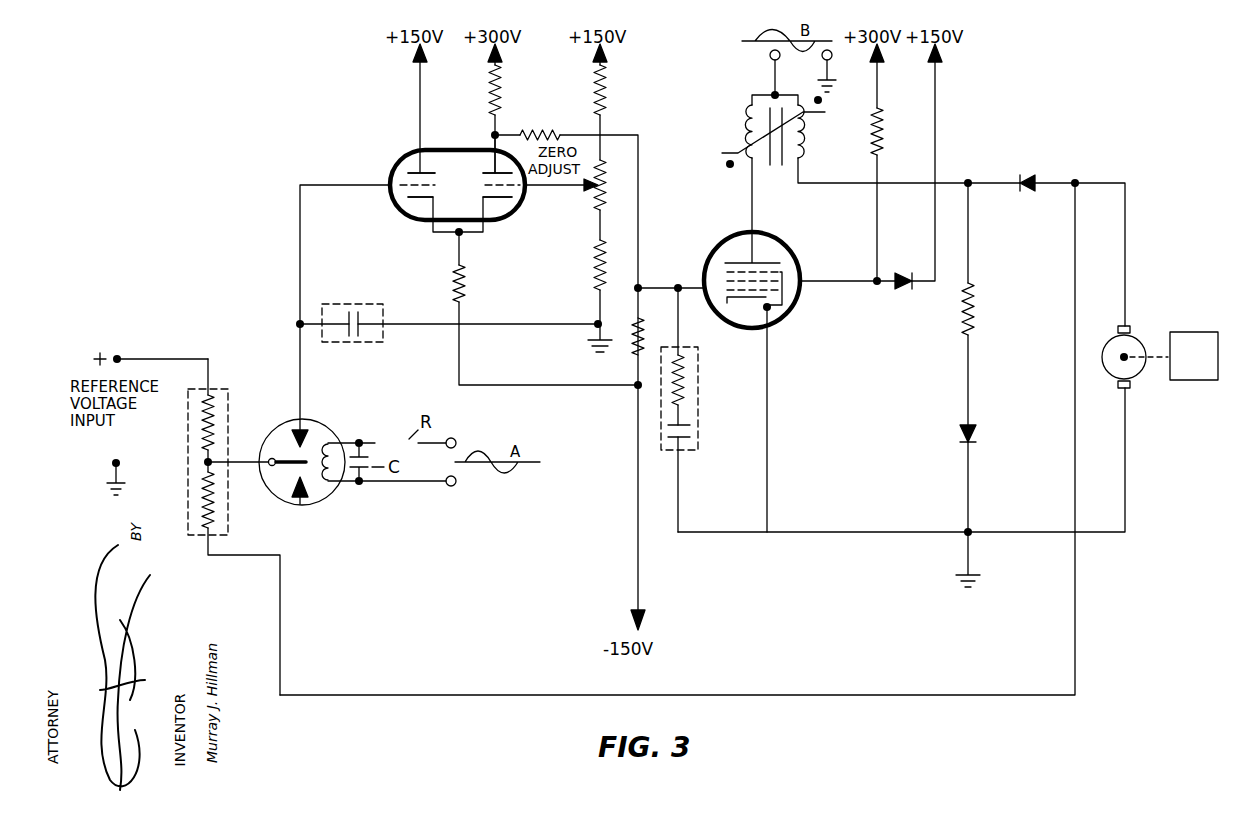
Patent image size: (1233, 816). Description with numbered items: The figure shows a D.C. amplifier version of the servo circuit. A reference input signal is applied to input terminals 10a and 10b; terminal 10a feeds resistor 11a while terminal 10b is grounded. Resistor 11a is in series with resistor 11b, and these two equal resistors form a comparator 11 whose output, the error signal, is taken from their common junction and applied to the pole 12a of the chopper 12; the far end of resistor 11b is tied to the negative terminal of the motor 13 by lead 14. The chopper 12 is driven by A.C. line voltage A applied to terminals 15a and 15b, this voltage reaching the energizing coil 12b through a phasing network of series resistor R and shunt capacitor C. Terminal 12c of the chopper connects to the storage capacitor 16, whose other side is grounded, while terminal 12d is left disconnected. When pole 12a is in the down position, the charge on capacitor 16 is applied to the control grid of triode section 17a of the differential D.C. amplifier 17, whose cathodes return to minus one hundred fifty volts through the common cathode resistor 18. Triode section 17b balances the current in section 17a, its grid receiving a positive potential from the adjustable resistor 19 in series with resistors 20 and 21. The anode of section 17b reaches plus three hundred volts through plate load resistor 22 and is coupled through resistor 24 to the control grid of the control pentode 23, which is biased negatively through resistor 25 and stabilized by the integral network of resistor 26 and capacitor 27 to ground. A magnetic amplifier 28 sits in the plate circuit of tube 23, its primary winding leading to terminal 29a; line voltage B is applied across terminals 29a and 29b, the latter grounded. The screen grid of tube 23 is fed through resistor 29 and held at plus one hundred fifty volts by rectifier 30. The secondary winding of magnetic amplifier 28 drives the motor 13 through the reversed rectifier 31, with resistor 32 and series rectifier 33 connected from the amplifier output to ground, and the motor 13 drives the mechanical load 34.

The input terminal 10a is at (123, 354).
The input terminal 10b is at (122, 465).
The comparator 11 is at (230, 389).
The resistor 11a is at (228, 422).
The resistor 11b is at (228, 510).
The chopper 12 is at (337, 494).
The pole 12a is at (285, 472).
The energizing coil 12b is at (337, 444).
The terminal 12c is at (305, 430).
The terminal 12d is at (312, 500).
The motor 13 is at (1142, 380).
The lead 14 is at (433, 690).
The terminal 15a is at (457, 439).
The terminal 15b is at (457, 486).
The capacitor 16 is at (362, 337).
The differential D.C. amplifier 17 is at (448, 150).
The triode section 17a is at (395, 212).
The triode section 17b is at (520, 212).
The common cathode resistor 18 is at (448, 286).
The adjustable resistor 19 is at (614, 185).
The resistor 20 is at (607, 93).
The resistor 21 is at (614, 265).
The plate load resistor 22 is at (508, 81).
The control pentode 23 is at (797, 311).
The resistor 24 is at (540, 130).
The resistor 25 is at (645, 331).
The resistor 26 is at (692, 371).
The capacitor 27 is at (692, 428).
The magnetic amplifier 28 is at (780, 167).
The resistor 29 is at (895, 131).
The terminal 29a is at (751, 72).
The terminal 29b is at (844, 71).
The rectifier 30 is at (900, 292).
The rectifier 31 is at (1040, 177).
The resistor 32 is at (983, 305).
The rectifier 33 is at (980, 430).
The mechanical load 34 is at (1194, 356).